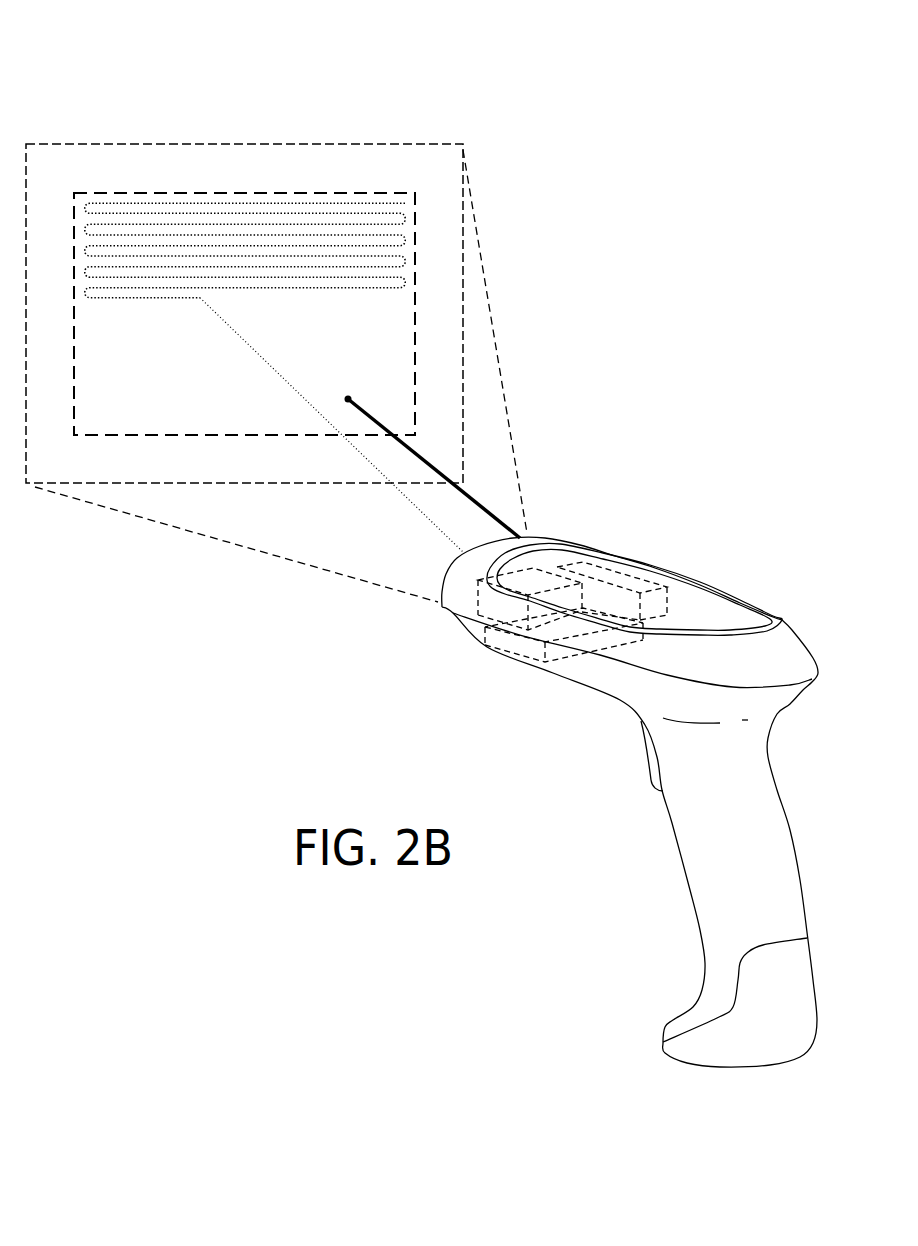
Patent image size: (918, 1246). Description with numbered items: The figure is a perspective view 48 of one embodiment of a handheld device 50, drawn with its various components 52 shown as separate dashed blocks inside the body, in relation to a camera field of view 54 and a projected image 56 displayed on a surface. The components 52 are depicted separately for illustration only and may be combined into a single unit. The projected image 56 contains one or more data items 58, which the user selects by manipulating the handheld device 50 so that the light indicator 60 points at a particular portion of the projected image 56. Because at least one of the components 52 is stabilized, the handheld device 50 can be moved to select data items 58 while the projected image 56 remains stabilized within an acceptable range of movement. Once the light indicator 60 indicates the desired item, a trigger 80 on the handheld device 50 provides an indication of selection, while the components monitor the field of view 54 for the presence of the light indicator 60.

The perspective view 48 is at (74, 77).
The handheld device 50 is at (715, 588).
The components 52 is at (533, 700).
The camera field of view 54 is at (430, 145).
The projected image 56 is at (387, 193).
The data items 58 is at (157, 299).
The light indicator 60 is at (377, 418).
The trigger 80 is at (652, 762).